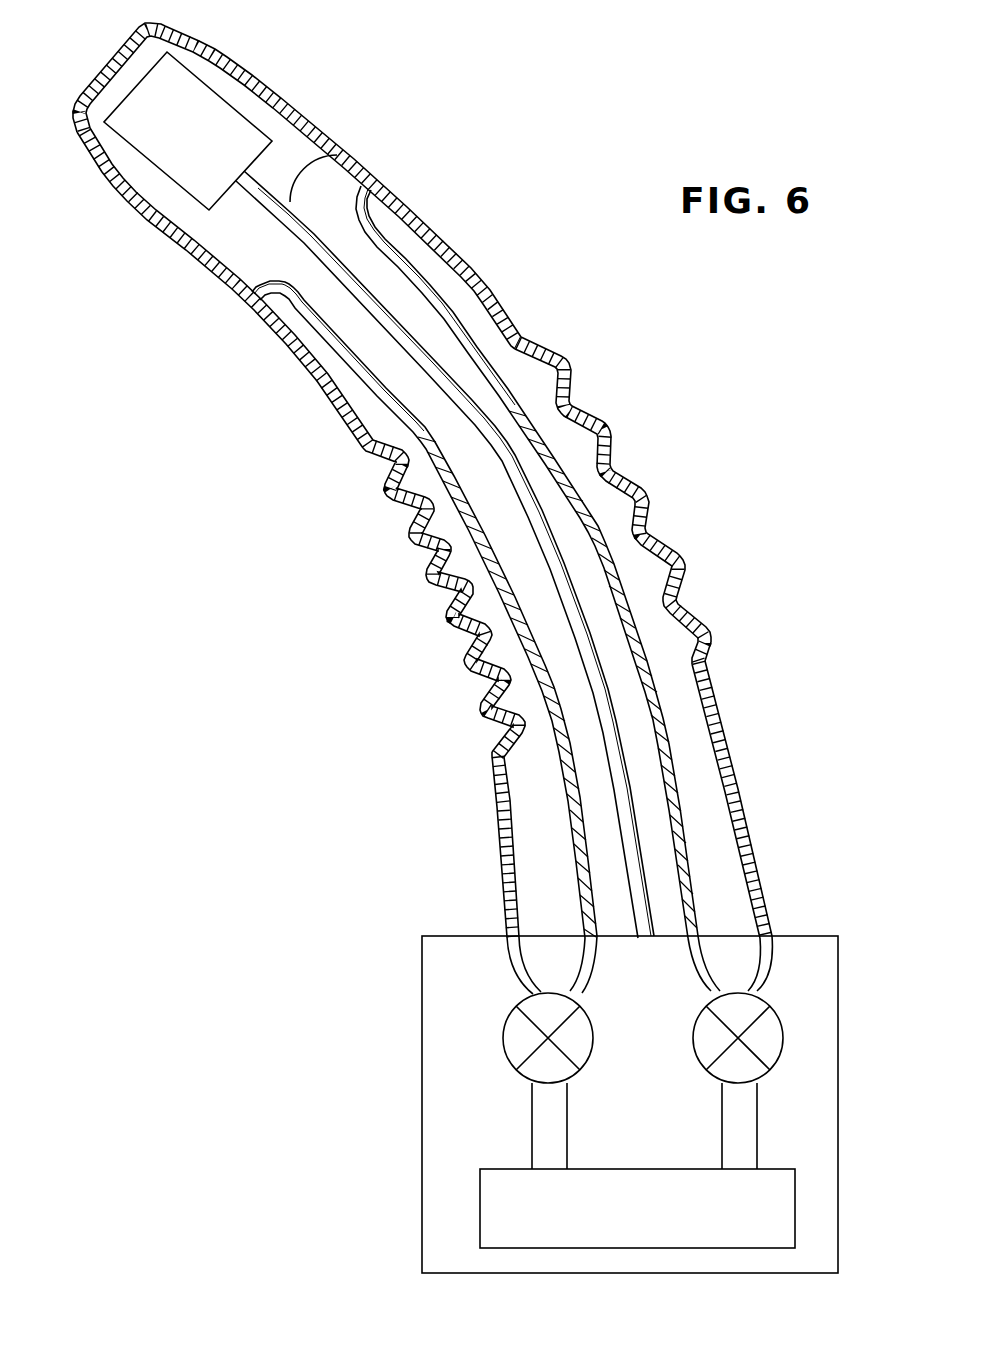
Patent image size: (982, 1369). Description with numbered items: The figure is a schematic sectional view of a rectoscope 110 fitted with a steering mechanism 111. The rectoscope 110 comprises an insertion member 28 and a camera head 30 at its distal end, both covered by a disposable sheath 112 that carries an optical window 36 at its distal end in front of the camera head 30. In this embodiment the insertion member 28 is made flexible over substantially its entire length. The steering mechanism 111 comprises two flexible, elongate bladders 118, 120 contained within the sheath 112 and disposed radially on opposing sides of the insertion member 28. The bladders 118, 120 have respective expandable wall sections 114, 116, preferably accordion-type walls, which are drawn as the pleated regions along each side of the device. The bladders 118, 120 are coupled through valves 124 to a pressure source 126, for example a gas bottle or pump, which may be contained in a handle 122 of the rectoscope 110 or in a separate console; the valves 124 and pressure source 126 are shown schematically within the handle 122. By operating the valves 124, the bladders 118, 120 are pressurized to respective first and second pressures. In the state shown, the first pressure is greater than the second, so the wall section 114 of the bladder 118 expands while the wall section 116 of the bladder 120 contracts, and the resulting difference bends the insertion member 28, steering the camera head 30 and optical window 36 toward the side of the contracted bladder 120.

The insertion member 28 is at (350, 152).
The camera head 30 is at (175, 162).
The optical window 36 is at (100, 62).
The rectoscope 110 is at (506, 200).
The steering mechanism 111 is at (645, 398).
The disposable sheath 112 is at (230, 46).
The expandable wall section 114 is at (648, 493).
The expandable wall section 116 is at (432, 577).
The bladder 118 is at (552, 392).
The bladder 120 is at (409, 450).
The handle 122 is at (422, 1110).
The valves 124 is at (702, 1042).
The pressure source 126 is at (795, 1194).